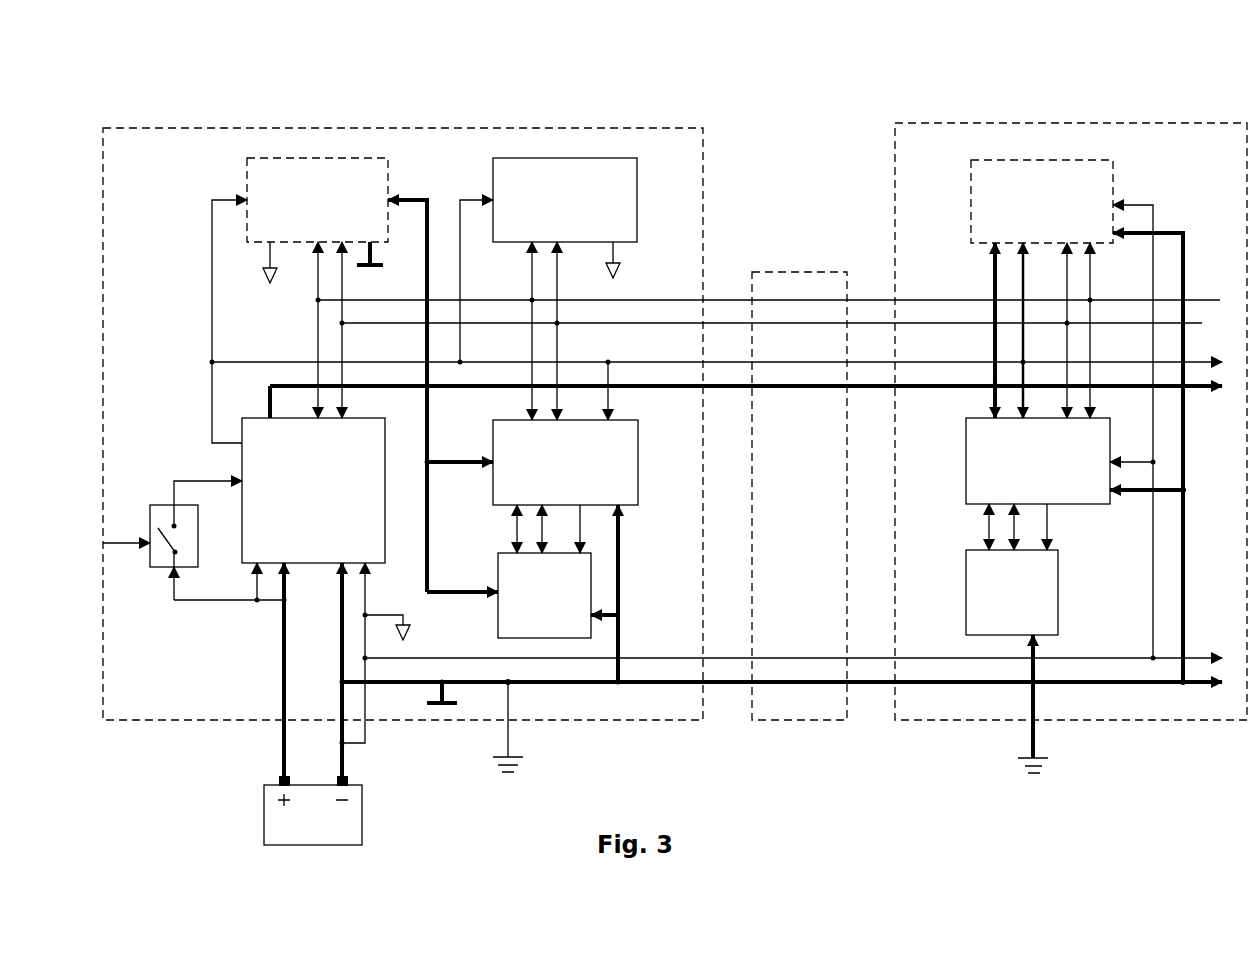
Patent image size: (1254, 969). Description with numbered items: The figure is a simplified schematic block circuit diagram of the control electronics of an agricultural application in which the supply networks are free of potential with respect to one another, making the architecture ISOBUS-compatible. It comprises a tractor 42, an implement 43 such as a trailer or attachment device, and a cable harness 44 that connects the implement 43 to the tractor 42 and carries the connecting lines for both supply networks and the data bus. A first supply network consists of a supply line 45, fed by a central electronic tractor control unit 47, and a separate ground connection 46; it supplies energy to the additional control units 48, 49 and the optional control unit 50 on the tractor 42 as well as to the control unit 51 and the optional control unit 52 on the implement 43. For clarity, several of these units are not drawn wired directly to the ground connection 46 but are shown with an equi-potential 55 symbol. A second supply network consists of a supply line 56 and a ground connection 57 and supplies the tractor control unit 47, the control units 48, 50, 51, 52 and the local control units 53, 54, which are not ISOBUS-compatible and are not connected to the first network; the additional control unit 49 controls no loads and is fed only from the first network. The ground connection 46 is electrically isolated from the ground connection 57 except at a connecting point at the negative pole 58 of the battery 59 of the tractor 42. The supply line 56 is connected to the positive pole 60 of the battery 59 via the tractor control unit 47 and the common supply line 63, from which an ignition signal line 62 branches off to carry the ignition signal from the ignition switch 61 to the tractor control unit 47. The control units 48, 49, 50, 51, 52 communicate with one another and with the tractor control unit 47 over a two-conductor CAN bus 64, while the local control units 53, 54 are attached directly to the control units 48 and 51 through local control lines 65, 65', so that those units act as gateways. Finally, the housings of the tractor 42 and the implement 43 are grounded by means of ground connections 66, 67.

The tractor 42 is at (363, 128).
The implement 43 is at (970, 123).
The cable harness 44 is at (772, 270).
The supply line 45 is at (662, 360).
The ground connection 46 is at (668, 660).
The tractor control unit 47 is at (313, 490).
The additional control unit 48 is at (565, 462).
The additional control unit 49 is at (565, 200).
The optional control unit 50 is at (317, 200).
The control unit 51 is at (1038, 461).
The optional control unit 52 is at (1042, 201).
The local control unit 53 is at (544, 595).
The local control unit 54 is at (1012, 592).
The equi-potential 55 is at (272, 275).
The supply line 56 is at (680, 395).
The ground connection 57 is at (647, 683).
The negative pole 58 is at (350, 777).
The battery 59 is at (308, 827).
The positive pole 60 is at (276, 778).
The ignition switch 61 is at (148, 520).
The ignition signal line 62 is at (187, 482).
The common supply line 63 is at (282, 652).
The CAN bus 64 is at (830, 323).
The local control line 65 is at (513, 529).
The local control line 65' is at (976, 534).
The ground connection 66 is at (510, 763).
The ground connection 67 is at (1028, 762).